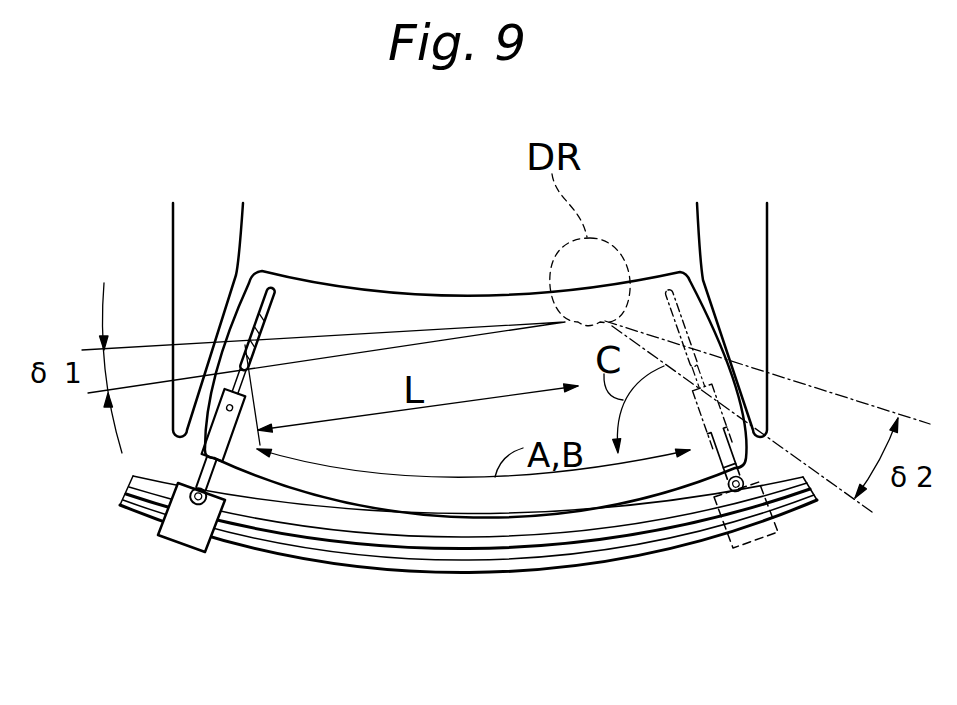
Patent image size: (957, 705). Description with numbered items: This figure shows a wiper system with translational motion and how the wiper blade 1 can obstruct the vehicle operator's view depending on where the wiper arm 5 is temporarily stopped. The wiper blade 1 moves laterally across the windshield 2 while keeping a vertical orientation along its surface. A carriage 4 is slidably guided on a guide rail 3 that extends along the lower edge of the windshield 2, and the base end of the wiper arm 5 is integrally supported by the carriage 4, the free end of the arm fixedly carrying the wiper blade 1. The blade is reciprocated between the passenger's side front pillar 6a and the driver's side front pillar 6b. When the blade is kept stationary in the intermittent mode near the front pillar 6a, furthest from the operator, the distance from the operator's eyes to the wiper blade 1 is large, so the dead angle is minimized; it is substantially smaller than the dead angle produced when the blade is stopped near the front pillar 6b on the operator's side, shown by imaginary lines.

The wiper blade 1 is at (279, 298).
The windshield 2 is at (364, 316).
The guide rail 3 is at (478, 572).
The carriage 4 is at (173, 535).
The wiper arm 5 is at (211, 437).
The passenger's side front pillar 6a is at (237, 290).
The driver's side front pillar 6b is at (702, 290).